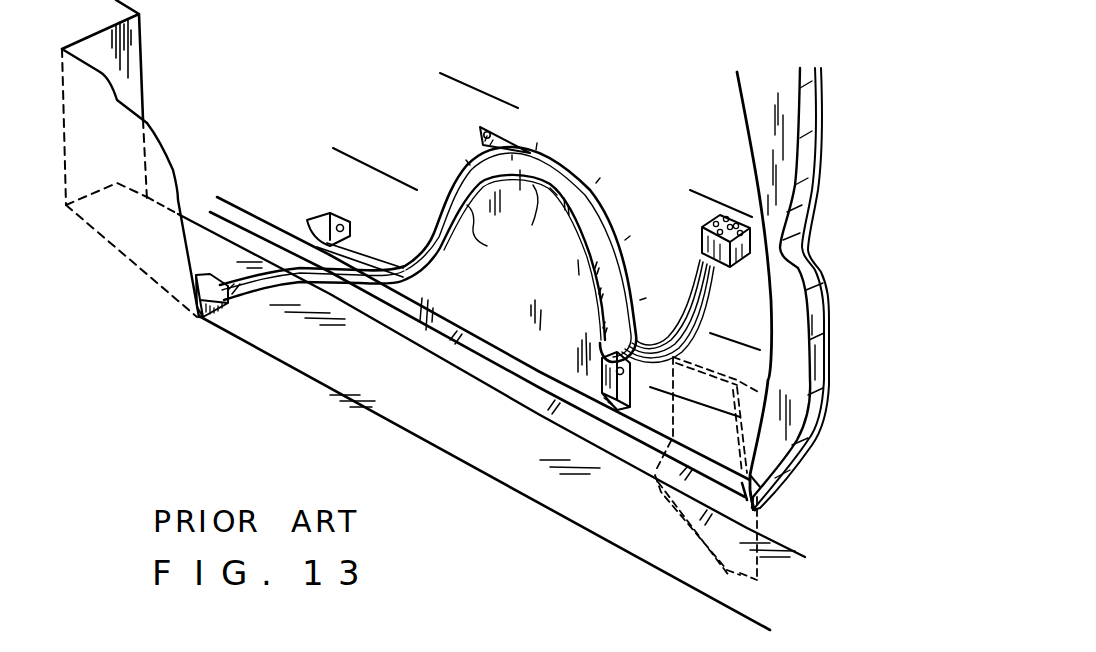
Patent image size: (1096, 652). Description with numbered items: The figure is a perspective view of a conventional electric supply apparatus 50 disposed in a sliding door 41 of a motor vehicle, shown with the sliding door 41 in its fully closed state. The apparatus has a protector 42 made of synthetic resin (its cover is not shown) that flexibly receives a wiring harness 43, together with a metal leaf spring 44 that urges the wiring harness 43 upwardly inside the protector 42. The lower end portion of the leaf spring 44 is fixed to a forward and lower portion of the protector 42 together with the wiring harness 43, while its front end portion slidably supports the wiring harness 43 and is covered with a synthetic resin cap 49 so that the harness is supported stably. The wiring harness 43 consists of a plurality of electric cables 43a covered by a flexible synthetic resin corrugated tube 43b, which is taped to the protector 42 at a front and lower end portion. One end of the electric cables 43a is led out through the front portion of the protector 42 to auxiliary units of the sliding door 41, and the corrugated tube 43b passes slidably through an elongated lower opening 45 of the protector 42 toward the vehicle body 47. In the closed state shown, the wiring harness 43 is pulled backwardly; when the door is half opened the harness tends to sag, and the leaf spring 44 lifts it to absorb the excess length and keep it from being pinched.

The sliding door 41 is at (830, 392).
The protector 42 is at (568, 176).
The wiring harness 43 is at (467, 206).
The electric cables 43a is at (686, 300).
The corrugated tube 43b is at (606, 292).
The leaf spring 44 is at (587, 244).
The elongated lower opening 45 is at (502, 352).
The vehicle body 47 is at (152, 71).
The cap 49 is at (499, 192).
The electric supply apparatus 50 is at (551, 141).